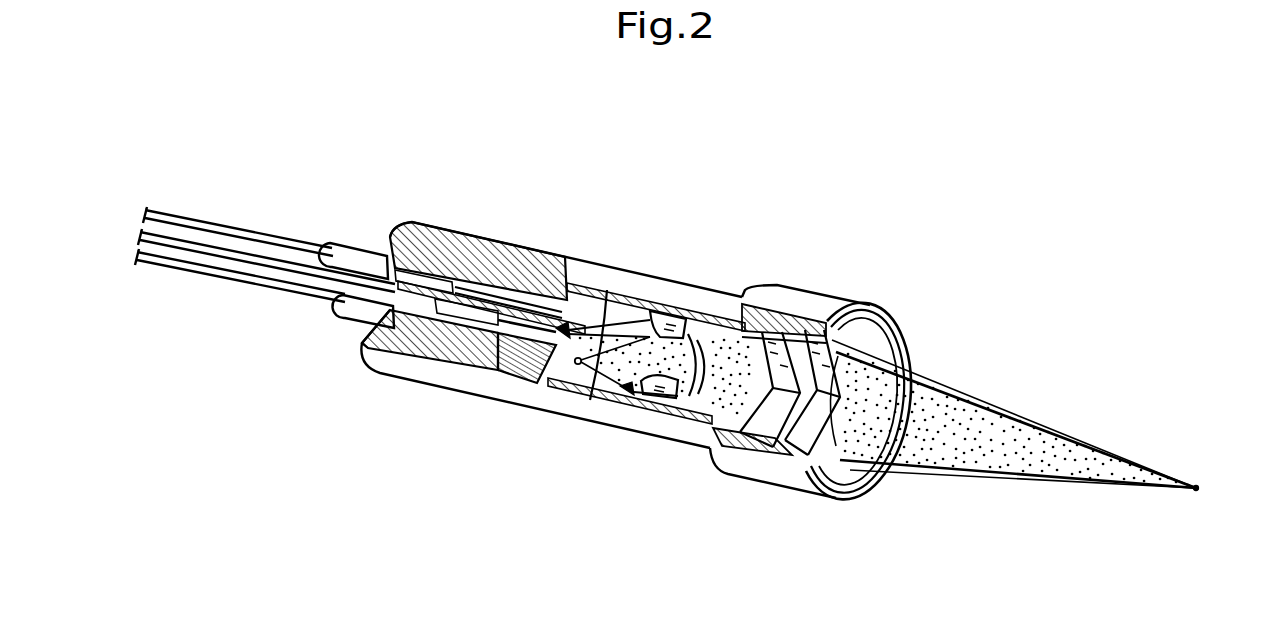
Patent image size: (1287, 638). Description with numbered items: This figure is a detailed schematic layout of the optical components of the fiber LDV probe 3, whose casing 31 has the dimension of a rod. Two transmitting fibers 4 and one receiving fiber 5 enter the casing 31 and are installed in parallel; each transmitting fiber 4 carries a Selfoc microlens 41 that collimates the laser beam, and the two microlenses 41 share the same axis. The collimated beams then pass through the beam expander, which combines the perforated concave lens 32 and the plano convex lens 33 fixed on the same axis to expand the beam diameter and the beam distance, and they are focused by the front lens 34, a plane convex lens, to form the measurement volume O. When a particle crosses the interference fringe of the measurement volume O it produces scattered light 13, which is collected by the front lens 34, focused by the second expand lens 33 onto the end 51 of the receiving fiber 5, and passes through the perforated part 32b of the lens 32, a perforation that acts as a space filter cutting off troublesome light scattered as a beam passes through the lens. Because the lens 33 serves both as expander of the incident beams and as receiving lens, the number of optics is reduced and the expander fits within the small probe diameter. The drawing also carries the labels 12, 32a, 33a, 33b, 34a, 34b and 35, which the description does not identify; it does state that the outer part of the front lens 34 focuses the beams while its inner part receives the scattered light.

The fiber LDV probe 3 is at (243, 100).
The transmitting fiber 4 is at (179, 210).
The receiving fiber 5 is at (168, 263).
The light beam 12 is at (623, 333).
The scattered light 13 is at (624, 389).
The casing 31 is at (397, 380).
The perforated concave lens 32 is at (593, 398).
The lens holder lower part 32a is at (628, 402).
The perforated part of the lens 32b is at (707, 312).
The plano convex lens 33 is at (707, 448).
The lens mount lower part 33a is at (745, 432).
The lens mount upper part 33b is at (789, 306).
The front lens 34 is at (882, 309).
The end cap inner ring 34a is at (860, 328).
The end cap bore 34b is at (842, 436).
The tube 35 is at (576, 288).
The Selfoc microlens 41 is at (448, 222).
The end of the receiving fiber 51 is at (497, 372).
The measurement volume O is at (1199, 488).